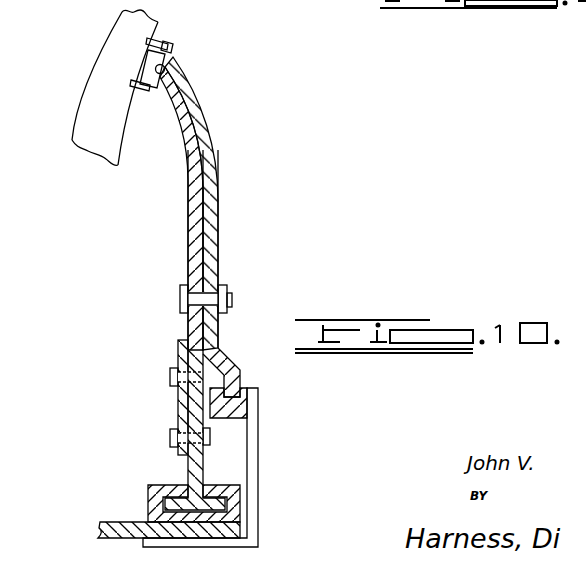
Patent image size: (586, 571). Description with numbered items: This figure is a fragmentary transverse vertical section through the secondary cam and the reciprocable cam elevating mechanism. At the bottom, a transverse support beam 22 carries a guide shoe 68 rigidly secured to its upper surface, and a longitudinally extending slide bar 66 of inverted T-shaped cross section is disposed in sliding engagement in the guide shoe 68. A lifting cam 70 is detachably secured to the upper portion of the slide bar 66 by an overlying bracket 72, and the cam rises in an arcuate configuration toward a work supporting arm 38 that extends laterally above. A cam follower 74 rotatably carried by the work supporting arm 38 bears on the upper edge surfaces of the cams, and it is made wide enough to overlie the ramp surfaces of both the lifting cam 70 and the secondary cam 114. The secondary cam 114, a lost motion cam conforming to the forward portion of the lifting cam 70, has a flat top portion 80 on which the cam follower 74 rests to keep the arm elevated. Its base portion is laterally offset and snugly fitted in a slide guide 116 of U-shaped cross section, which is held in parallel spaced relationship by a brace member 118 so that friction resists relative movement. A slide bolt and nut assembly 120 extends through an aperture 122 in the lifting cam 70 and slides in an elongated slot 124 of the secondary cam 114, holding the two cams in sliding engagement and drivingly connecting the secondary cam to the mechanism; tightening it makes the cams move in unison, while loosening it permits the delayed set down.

The transverse support beam 22 is at (120, 533).
The work supporting arm 38 is at (97, 85).
The slide bar 66 is at (188, 466).
The guide shoe 68 is at (148, 497).
The lifting cam 70 is at (193, 182).
The overlying bracket 72 is at (178, 350).
The cam follower 74 is at (170, 52).
The flat top portion 80 is at (165, 68).
The secondary cam 114 is at (218, 158).
The slide guide 116 is at (244, 385).
The brace member 118 is at (257, 440).
The slide bolt and nut assembly 120 is at (224, 283).
The aperture 122 is at (180, 299).
The elongated slot 124 is at (232, 299).